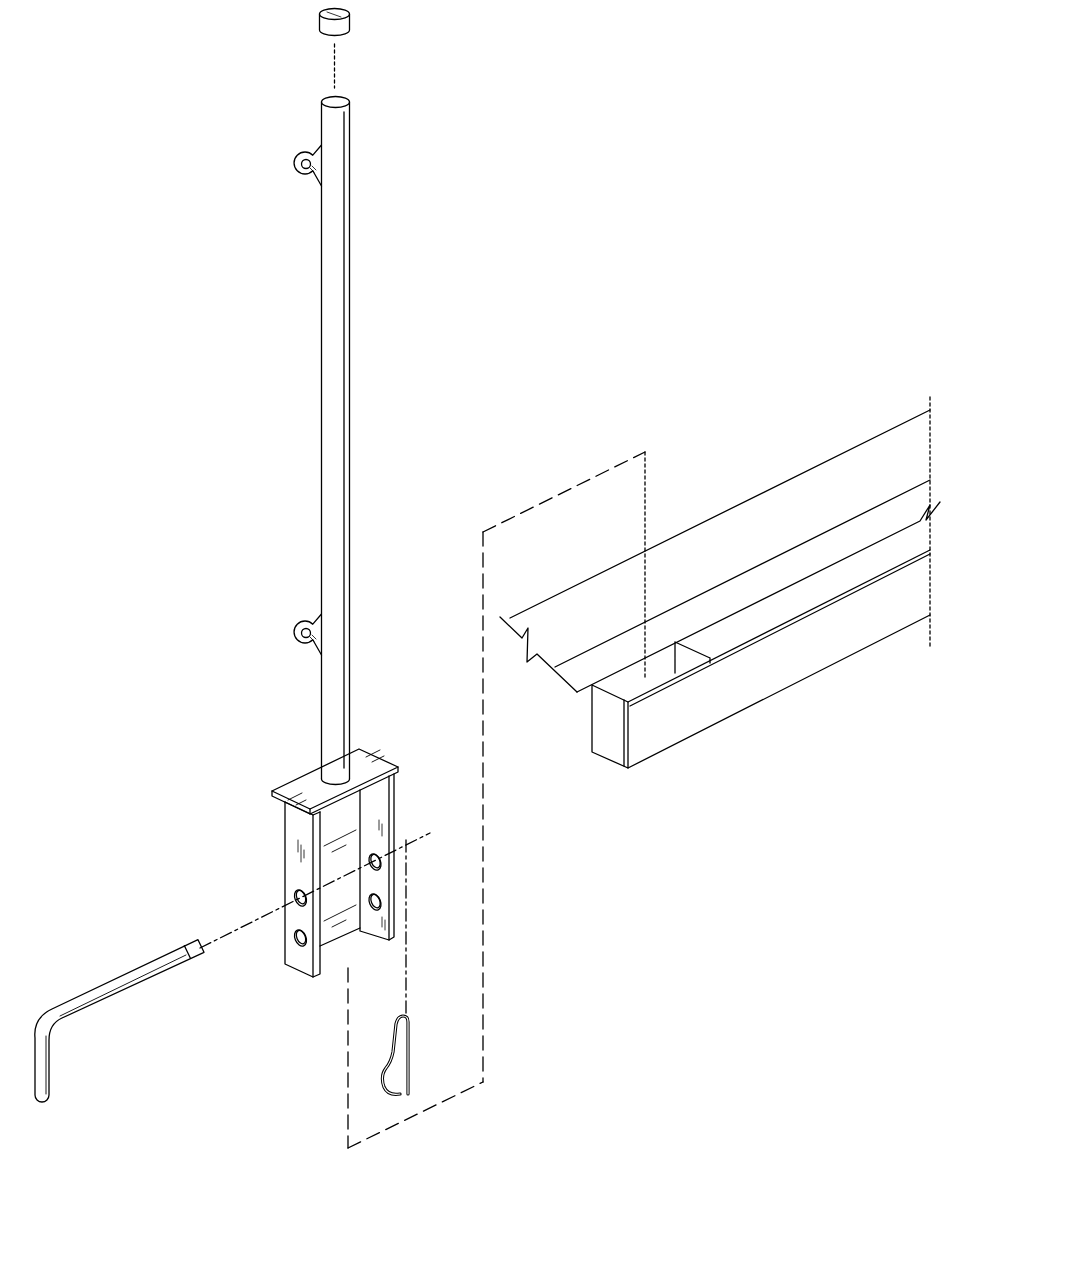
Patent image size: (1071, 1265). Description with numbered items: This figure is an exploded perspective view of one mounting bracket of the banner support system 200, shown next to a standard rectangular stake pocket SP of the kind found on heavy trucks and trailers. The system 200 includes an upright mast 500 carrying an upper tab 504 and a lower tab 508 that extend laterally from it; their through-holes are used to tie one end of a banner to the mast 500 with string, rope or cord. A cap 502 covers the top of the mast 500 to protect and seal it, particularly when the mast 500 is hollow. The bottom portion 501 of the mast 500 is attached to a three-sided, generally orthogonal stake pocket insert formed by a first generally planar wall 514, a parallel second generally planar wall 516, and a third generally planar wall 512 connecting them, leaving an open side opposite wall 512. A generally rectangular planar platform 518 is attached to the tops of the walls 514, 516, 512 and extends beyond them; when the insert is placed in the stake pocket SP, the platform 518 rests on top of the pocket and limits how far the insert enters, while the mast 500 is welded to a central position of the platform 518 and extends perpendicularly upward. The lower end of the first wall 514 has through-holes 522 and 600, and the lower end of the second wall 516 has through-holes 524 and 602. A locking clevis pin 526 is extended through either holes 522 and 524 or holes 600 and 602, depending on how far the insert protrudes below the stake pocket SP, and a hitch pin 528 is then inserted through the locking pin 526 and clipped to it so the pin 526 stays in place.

The system 200 is at (252, 445).
The mast 500 is at (351, 443).
The bottom portion 501 is at (149, 790).
The cap 502 is at (320, 22).
The upper tab 504 is at (293, 152).
The lower tab 508 is at (310, 619).
The third generally planar wall 512 is at (338, 927).
The first generally planar wall 514 is at (285, 818).
The second generally planar wall 516 is at (393, 790).
The platform 518 is at (370, 750).
The through-hole 522 is at (278, 950).
The through-hole 524 is at (373, 915).
The locking clevis pin 526 is at (66, 1005).
The hitch pin 528 is at (413, 1093).
The through-hole 600 is at (283, 893).
The through-hole 602 is at (377, 852).
The stake pocket SP is at (668, 642).